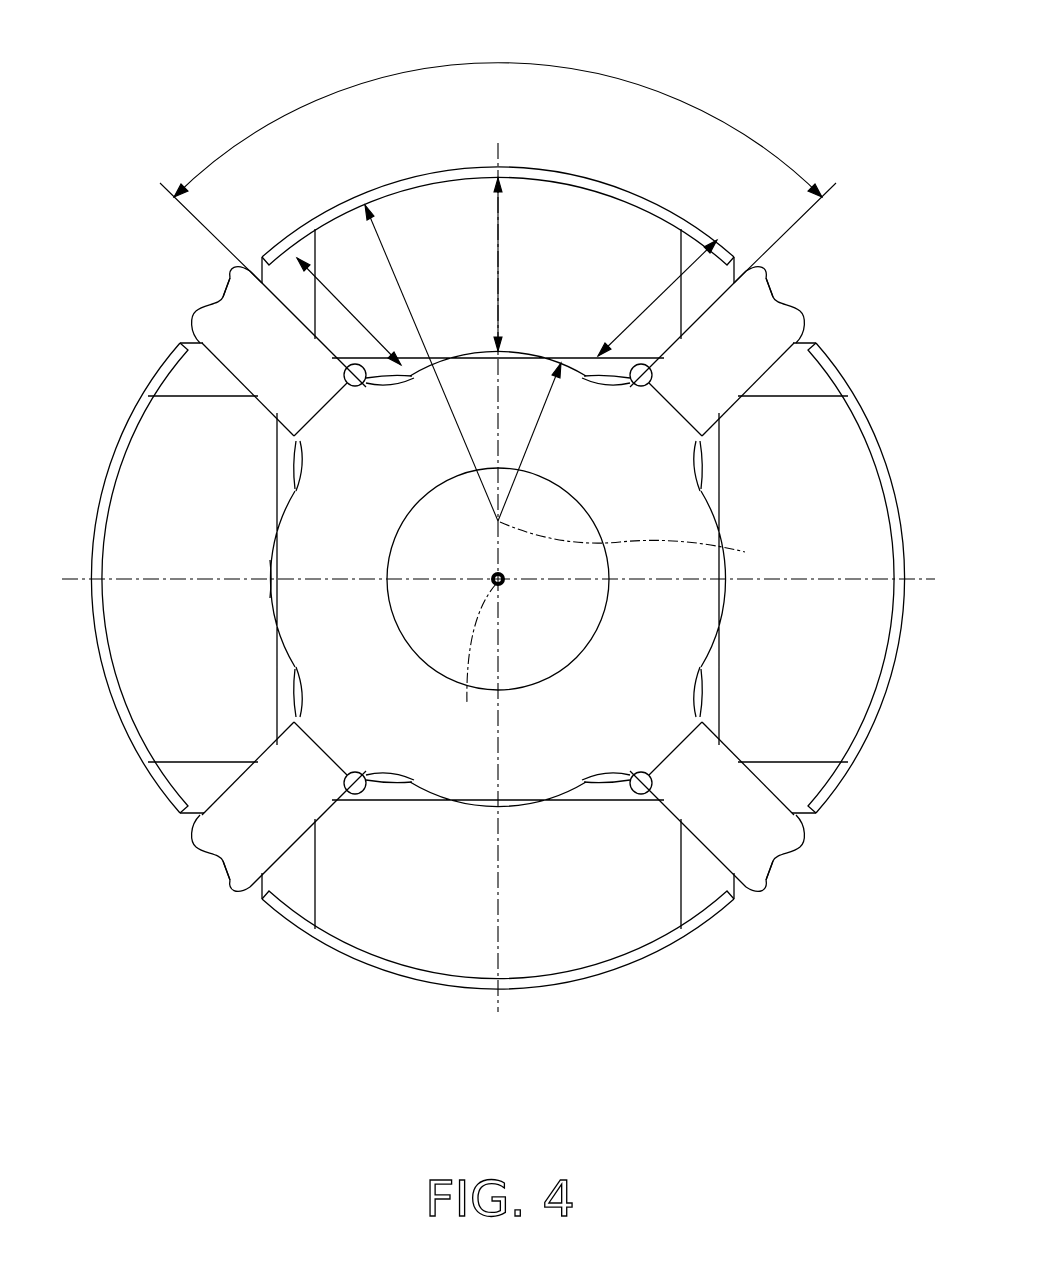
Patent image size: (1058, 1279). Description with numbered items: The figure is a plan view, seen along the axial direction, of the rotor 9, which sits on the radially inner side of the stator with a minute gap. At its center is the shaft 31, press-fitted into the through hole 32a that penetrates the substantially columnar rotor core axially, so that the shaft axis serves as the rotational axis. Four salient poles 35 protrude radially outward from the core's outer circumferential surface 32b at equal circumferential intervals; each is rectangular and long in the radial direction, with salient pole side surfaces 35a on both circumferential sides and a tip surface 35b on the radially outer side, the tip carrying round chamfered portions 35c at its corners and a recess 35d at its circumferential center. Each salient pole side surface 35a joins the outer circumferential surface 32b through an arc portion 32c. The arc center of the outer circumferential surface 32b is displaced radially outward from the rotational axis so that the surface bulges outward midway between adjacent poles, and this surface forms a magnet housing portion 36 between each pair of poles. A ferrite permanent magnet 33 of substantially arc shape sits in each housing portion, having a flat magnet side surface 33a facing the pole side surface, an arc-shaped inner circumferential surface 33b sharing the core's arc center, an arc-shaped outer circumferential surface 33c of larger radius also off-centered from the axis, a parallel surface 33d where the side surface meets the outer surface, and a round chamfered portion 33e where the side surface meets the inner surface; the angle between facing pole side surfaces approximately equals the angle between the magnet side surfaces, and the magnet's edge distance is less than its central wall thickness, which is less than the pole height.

The rotor 9 is at (750, 105).
The shaft 31 is at (392, 543).
The through hole 32a is at (553, 652).
The outer circumferential surface 32b is at (497, 166).
The arc portion 32c is at (294, 458).
The permanent magnet 33 is at (534, 165).
The magnet side surface 33a is at (292, 312).
The inner circumferential surface 33b is at (390, 386).
The outer circumferential surface 33c is at (432, 172).
The parallel surface 33d is at (229, 282).
The round chamfered portion 33e is at (355, 387).
The salient pole 35 is at (207, 351).
The salient pole side surface 35a is at (222, 372).
The tip surface 35b is at (189, 328).
The round chamfered portion 35c is at (236, 263).
The recess 35d is at (221, 292).
The magnet housing portion 36 is at (272, 602).